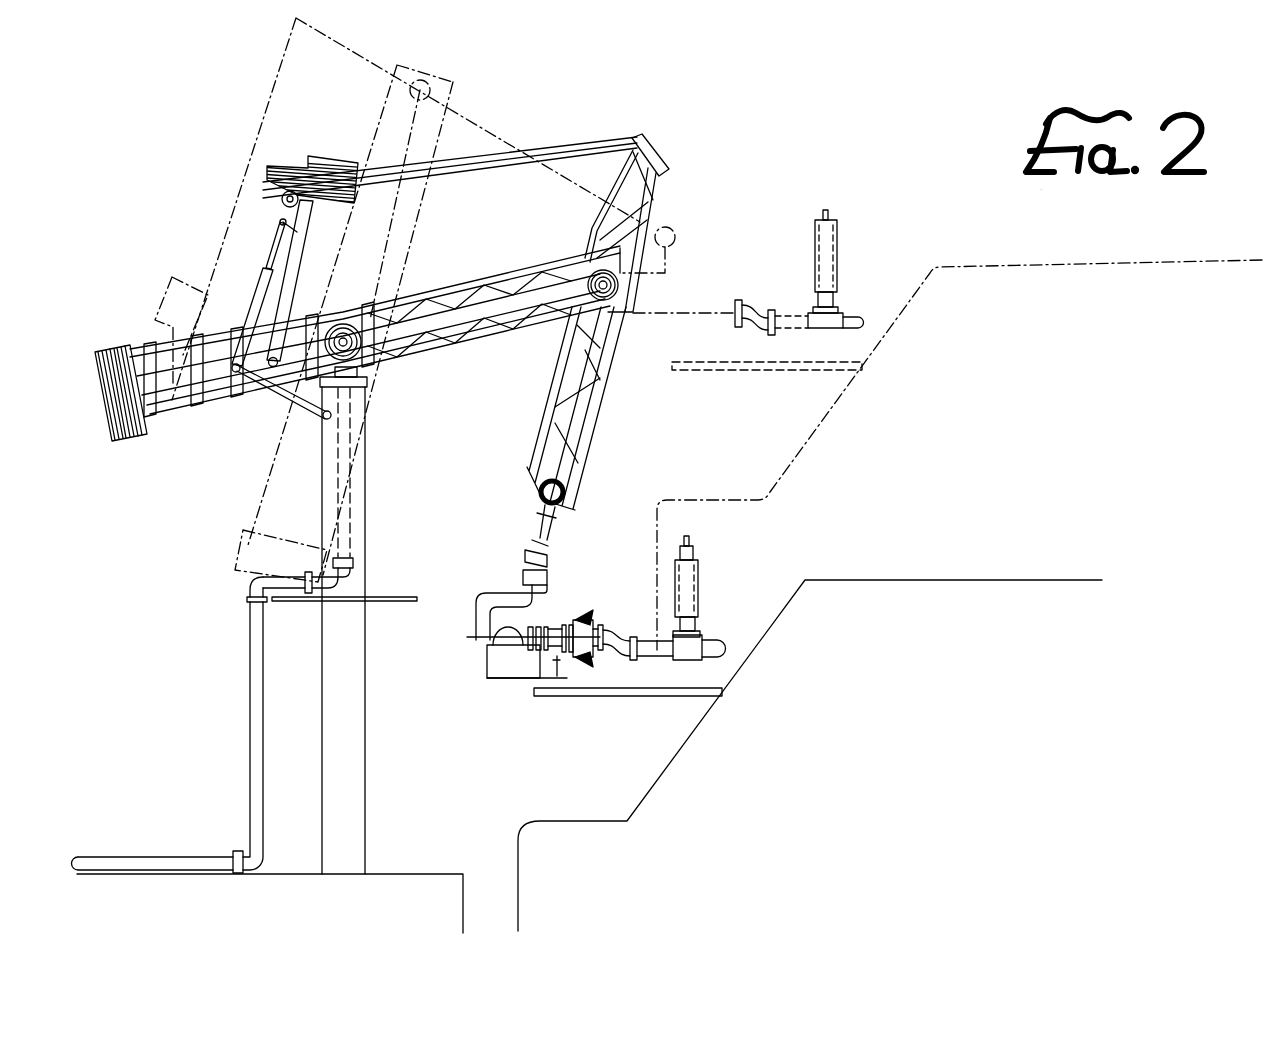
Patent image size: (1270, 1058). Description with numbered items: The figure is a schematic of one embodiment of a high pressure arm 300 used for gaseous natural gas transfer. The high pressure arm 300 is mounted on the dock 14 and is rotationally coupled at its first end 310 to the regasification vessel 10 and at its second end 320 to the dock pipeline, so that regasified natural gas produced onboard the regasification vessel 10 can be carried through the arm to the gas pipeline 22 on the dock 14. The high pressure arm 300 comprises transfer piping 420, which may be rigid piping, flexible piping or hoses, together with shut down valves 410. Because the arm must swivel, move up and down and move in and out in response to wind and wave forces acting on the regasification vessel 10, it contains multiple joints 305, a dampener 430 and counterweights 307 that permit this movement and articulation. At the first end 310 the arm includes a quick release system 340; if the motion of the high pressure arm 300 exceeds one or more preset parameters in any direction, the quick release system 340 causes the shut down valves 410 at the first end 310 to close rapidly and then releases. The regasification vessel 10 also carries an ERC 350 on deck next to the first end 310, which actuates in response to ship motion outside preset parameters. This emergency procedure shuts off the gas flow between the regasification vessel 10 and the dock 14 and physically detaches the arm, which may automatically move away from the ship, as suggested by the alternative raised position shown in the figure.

The regasification vessel 10 is at (810, 744).
The dock 14 is at (292, 916).
The gas pipeline 22 is at (176, 855).
The high pressure arm 300 is at (660, 97).
The joints 305 is at (344, 335).
The counterweights 307 is at (330, 155).
The first end 310 is at (573, 562).
The second end 320 is at (306, 574).
The quick release system 340 is at (559, 656).
The ERC 350 is at (700, 578).
The shut down valves 410 is at (487, 658).
The transfer piping 420 is at (478, 285).
The dampener 430 is at (262, 275).